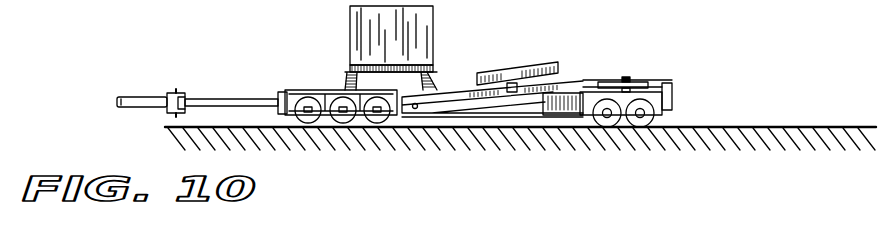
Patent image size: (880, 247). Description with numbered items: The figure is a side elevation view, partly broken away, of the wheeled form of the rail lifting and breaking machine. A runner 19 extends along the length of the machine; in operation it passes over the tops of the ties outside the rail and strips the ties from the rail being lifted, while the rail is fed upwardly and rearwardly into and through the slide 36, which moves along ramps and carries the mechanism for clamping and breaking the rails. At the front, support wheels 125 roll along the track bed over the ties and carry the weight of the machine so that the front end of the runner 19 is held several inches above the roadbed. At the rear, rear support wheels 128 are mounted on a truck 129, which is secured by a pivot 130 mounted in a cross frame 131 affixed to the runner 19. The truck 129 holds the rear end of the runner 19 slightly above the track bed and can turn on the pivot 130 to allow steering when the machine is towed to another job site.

The runner 19 is at (443, 112).
The slide 36 is at (518, 68).
The support wheels 125 is at (378, 126).
The rear support wheels 128 is at (607, 127).
The truck 129 is at (670, 91).
The pivot 130 is at (626, 77).
The cross frame 131 is at (642, 77).